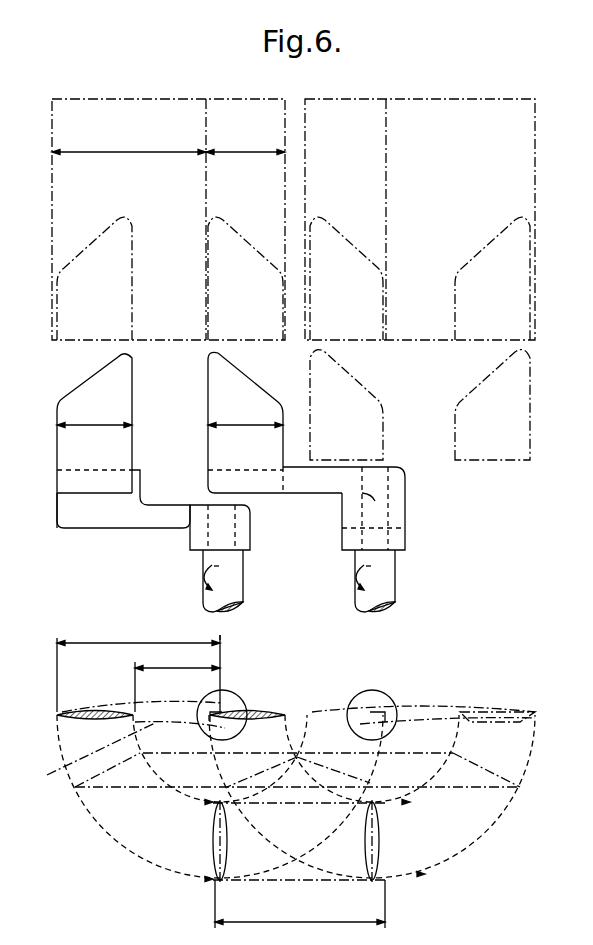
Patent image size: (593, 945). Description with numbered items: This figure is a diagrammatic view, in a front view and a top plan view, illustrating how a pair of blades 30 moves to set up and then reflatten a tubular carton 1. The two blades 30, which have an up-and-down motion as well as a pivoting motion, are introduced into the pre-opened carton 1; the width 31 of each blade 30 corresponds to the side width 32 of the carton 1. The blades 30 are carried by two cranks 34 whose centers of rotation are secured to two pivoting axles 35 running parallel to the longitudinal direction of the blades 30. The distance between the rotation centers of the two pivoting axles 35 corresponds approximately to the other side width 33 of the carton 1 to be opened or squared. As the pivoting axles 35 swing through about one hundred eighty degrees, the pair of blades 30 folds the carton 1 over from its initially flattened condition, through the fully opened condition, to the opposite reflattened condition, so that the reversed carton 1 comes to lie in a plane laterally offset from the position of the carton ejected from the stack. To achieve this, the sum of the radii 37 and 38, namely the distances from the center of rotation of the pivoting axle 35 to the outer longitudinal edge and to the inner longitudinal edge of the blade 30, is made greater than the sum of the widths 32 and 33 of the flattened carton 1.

The tubular carton 1 is at (52, 221).
The blade 30 is at (63, 458).
The width of the blade 31 is at (170, 426).
The side width of the carton 32 is at (245, 153).
The side width of the carton 33 is at (218, 538).
The crank 34 is at (100, 524).
The pivoting axle 35 is at (233, 584).
The radius 37 is at (138, 673).
The radius 38 is at (177, 686).